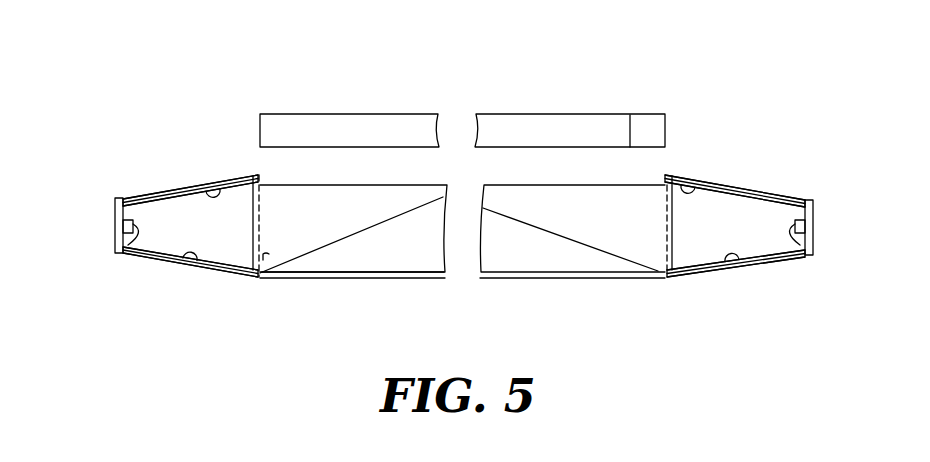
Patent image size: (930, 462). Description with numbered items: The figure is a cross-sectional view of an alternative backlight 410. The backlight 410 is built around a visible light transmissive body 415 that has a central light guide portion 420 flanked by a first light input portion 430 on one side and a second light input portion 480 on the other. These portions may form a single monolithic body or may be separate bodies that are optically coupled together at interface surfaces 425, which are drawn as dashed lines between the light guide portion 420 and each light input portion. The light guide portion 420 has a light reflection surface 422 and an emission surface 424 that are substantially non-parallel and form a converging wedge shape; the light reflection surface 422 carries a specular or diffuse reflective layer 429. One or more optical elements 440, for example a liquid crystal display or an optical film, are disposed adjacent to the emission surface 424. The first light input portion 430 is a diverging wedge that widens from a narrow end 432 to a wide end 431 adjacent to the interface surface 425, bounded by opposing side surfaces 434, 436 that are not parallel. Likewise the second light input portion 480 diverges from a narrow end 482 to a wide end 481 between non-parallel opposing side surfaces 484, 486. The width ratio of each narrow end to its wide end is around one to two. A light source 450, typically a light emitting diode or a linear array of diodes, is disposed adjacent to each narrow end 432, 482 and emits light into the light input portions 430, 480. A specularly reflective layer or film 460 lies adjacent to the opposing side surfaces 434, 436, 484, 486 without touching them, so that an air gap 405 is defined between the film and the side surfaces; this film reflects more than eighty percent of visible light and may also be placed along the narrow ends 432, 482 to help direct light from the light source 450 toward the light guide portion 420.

The air gap 405 is at (172, 197).
The backlight 410 is at (402, 75).
The visible light transmissive body 415 is at (290, 162).
The light guide portion 420 is at (330, 223).
The light reflection surface 422 is at (545, 232).
The emission surface 424 is at (632, 183).
The interface surfaces 425 is at (273, 280).
The reflective layer 429 is at (378, 280).
The first light input portion 430 is at (130, 177).
The wide end 431 is at (257, 244).
The narrow end 432 is at (122, 196).
The side surface 434 is at (215, 190).
The side surface 436 is at (192, 253).
The optical element 440 is at (533, 128).
The light source 450 is at (130, 247).
The specularly reflective layer or film 460 is at (158, 192).
The second light input portion 480 is at (793, 175).
The wide end 481 is at (670, 252).
The narrow end 482 is at (811, 200).
The side surface 484 is at (702, 186).
The side surface 486 is at (740, 258).